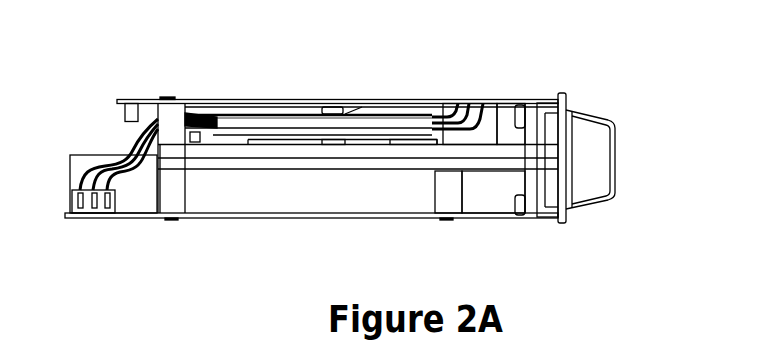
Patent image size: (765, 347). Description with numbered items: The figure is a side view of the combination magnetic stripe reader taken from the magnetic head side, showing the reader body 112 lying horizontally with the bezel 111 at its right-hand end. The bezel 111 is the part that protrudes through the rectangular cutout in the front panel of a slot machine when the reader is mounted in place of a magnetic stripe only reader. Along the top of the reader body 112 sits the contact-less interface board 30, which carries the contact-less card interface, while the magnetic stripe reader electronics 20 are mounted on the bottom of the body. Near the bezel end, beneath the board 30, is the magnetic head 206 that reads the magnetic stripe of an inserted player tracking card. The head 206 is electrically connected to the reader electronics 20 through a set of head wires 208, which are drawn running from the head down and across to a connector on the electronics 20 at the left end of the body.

The magnetic stripe reader electronics board 20 is at (283, 228).
The contact-less interface board 30 is at (277, 98).
The bezel 111 is at (593, 180).
The reader body 112 is at (492, 168).
The magnetic head 206 is at (481, 126).
The head wires 208 is at (122, 138).